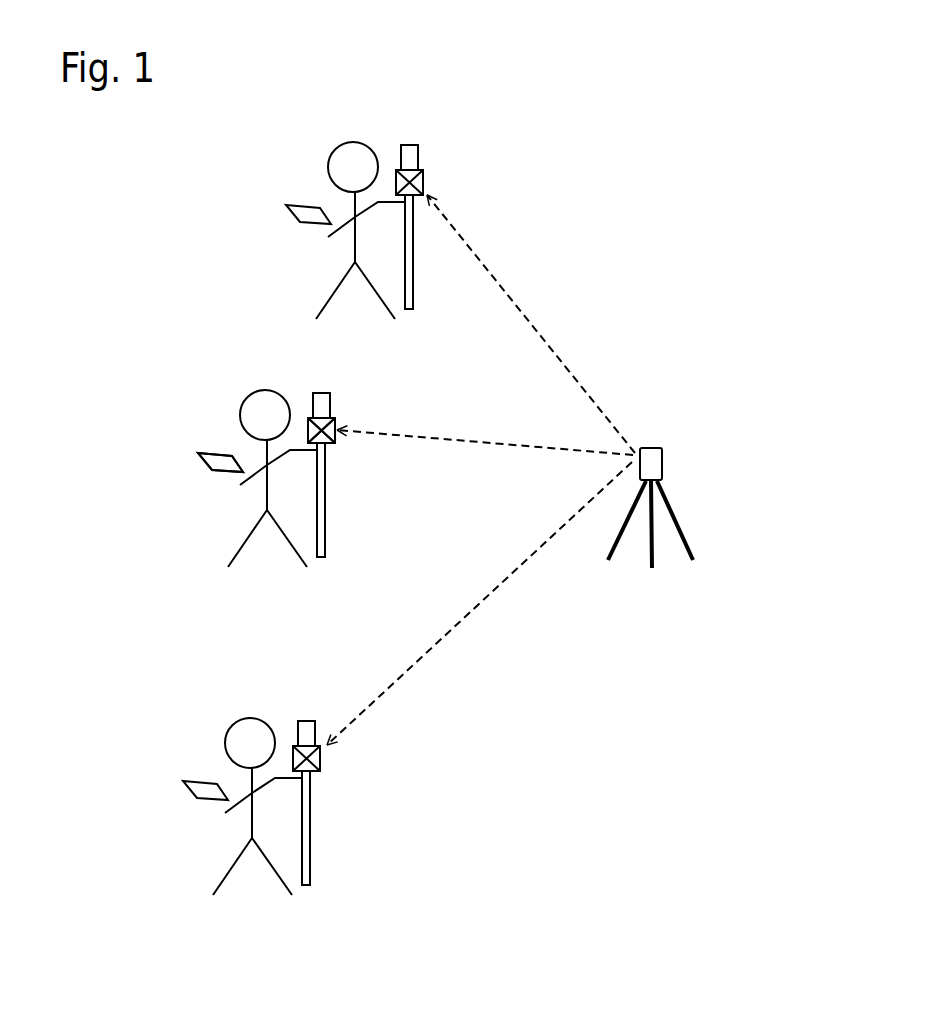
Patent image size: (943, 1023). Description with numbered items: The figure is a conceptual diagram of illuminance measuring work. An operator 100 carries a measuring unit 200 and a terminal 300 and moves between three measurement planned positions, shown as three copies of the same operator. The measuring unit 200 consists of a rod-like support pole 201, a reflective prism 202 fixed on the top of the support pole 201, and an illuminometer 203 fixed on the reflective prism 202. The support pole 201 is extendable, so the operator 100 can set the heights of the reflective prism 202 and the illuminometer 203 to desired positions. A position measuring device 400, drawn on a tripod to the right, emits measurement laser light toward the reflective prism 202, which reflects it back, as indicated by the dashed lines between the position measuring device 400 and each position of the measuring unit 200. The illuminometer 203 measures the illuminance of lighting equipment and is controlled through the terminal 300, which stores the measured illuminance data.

The operator 100 is at (224, 518).
The measuring unit 200 is at (338, 520).
The support pole 201 is at (325, 478).
The reflective prism 202 is at (336, 420).
The illuminometer 203 is at (330, 400).
The terminal 300 is at (191, 438).
The position measuring device 400 is at (679, 459).